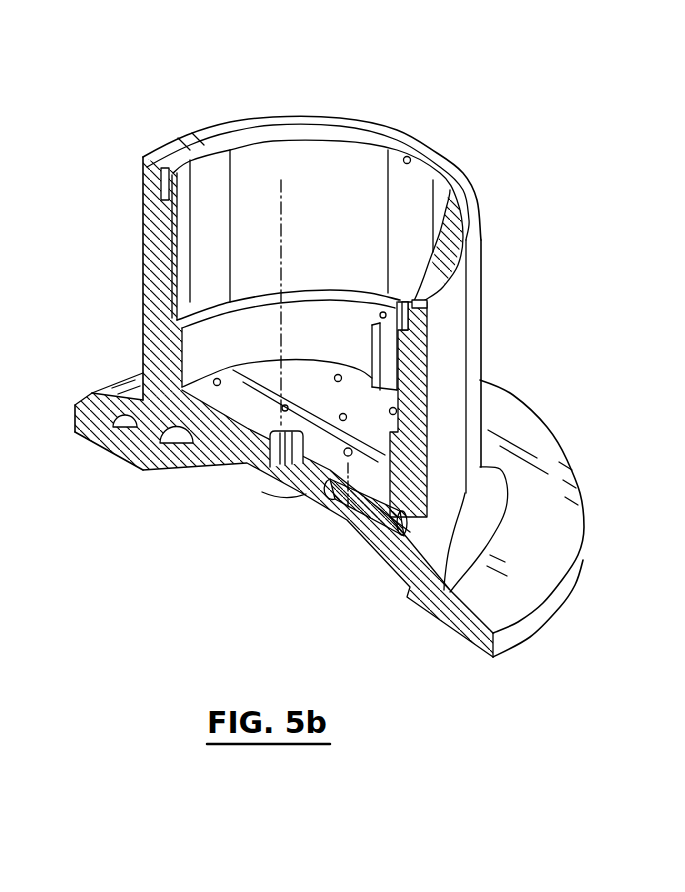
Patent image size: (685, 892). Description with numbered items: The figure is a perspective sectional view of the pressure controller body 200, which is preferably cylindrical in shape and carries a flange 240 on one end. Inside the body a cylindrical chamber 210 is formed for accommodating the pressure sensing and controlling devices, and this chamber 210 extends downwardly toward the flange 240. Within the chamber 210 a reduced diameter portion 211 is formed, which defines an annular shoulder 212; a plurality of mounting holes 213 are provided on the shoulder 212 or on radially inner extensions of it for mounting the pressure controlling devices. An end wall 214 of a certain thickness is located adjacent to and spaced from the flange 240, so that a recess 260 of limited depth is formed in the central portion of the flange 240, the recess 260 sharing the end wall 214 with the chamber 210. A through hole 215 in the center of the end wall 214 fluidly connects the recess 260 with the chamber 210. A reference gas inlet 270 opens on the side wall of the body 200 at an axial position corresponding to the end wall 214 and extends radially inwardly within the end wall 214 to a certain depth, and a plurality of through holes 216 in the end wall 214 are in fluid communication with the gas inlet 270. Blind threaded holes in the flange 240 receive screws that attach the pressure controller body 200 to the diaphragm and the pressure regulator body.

The pressure controller body 200 is at (413, 103).
The cylindrical chamber 210 is at (415, 193).
The reduced diameter portion 211 is at (313, 320).
The annular shoulder 212 is at (350, 293).
The mounting holes 213 is at (410, 302).
The end wall 214 is at (203, 455).
The through hole 215 is at (292, 447).
The through holes 216 is at (230, 410).
The flange 240 is at (540, 517).
The recess 260 is at (397, 563).
The reference gas inlet 270 is at (354, 520).